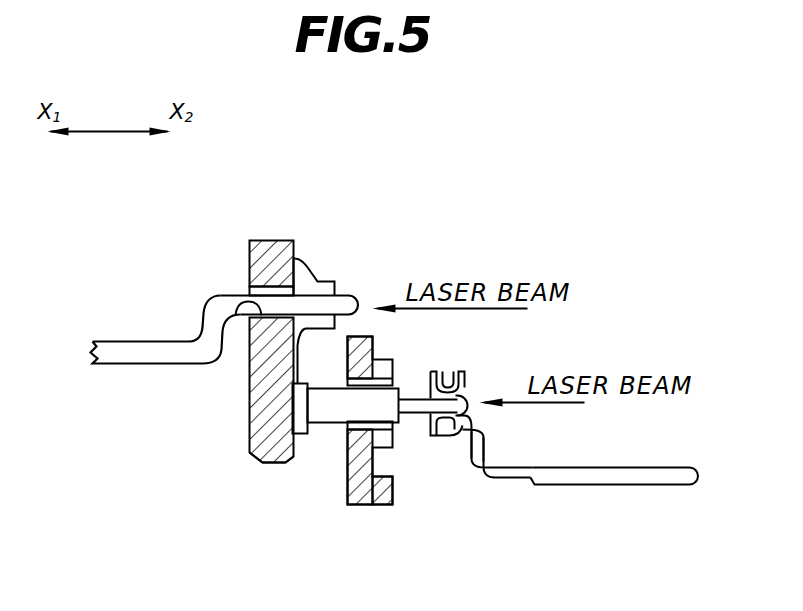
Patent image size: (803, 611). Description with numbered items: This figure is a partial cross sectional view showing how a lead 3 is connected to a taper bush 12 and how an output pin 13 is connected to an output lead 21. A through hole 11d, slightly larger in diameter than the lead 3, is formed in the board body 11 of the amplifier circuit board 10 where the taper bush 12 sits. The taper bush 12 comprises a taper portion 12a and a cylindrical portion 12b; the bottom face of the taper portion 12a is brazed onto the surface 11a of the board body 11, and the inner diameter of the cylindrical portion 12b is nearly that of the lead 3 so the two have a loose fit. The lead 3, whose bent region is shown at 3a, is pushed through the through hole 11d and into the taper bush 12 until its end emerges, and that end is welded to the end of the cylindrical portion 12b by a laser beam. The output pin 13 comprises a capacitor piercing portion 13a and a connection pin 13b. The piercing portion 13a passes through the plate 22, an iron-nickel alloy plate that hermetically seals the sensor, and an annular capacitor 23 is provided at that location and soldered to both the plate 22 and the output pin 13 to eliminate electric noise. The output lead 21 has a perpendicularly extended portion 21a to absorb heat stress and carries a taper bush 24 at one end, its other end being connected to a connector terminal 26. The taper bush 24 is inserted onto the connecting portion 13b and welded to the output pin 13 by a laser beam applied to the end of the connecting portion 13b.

The lead 3 is at (112, 350).
The plate flat portion 3a is at (195, 330).
The amplifier circuit board 10 is at (263, 239).
The board body 11 is at (280, 239).
The surface of the board body 11a is at (301, 462).
The through hole 11d is at (238, 320).
The taper bush 12 is at (386, 269).
The taper portion 12a is at (304, 261).
The cylindrical portion 12b is at (348, 285).
The output pin 13 is at (328, 408).
The capacitor piercing portion 13a is at (337, 422).
The connection pin 13b is at (436, 414).
The output lead 21 is at (480, 466).
The perpendicularly extended portion 21a is at (488, 438).
The plate 22 is at (394, 486).
The annular capacitor 23 is at (387, 357).
The taper bush 24 is at (458, 370).
The connector terminal 26 is at (570, 473).